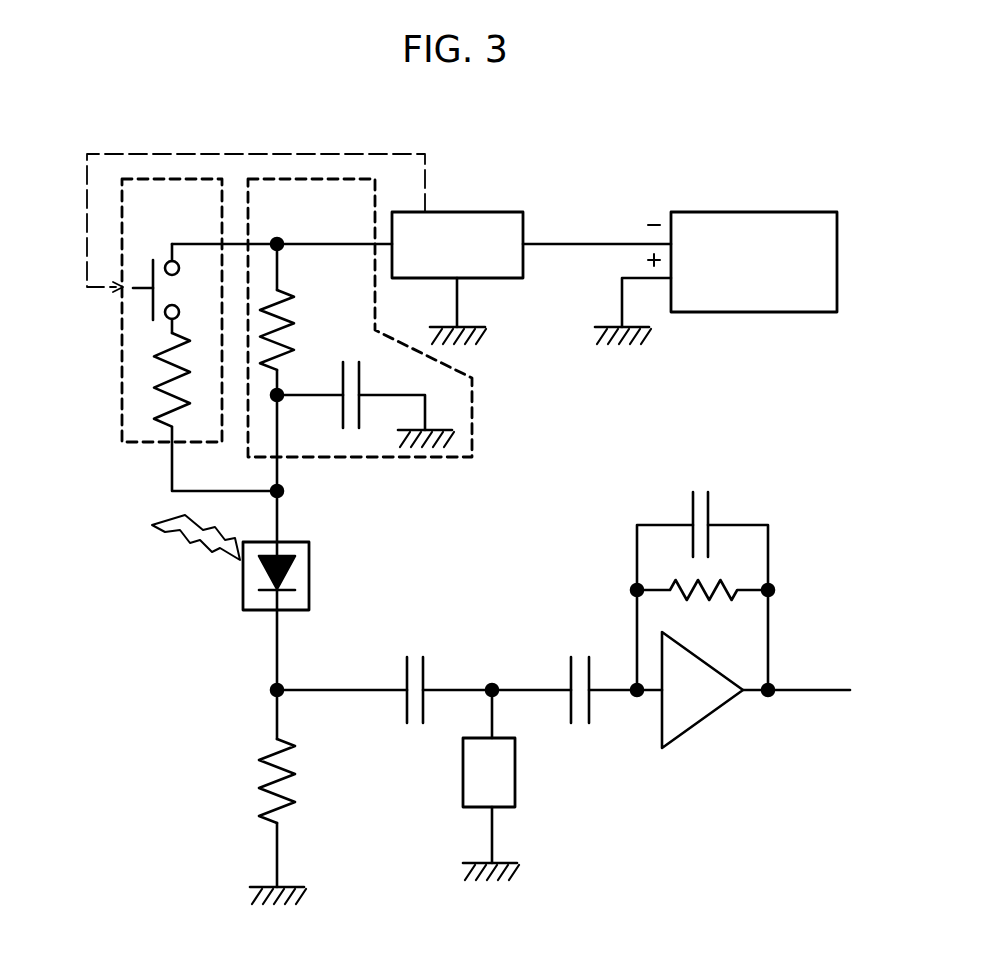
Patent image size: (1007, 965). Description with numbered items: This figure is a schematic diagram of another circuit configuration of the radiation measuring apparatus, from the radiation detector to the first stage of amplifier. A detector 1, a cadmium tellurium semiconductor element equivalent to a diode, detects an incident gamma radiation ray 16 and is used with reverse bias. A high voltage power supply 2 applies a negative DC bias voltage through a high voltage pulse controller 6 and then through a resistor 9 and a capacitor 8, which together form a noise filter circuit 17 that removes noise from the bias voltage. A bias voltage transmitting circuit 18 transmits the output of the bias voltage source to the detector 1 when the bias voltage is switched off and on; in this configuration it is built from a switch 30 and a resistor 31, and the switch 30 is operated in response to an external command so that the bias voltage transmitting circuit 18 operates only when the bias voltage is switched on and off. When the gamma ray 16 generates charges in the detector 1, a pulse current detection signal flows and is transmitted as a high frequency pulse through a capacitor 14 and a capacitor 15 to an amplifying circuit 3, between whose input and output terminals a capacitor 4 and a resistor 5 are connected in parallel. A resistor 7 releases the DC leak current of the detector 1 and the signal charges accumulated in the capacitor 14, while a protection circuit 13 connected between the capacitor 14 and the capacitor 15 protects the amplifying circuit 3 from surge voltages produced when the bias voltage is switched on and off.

The detector 1 is at (243, 580).
The high voltage power supply 2 is at (742, 212).
The amplifying circuit 3 is at (708, 708).
The capacitor 4 is at (703, 490).
The resistor 5 is at (720, 582).
The high voltage pulse controller 6 is at (455, 212).
The resistor 7 is at (262, 782).
The capacitor 8 is at (363, 418).
The resistor 9 is at (295, 352).
The protection circuit 13 is at (515, 780).
The capacitor 14 is at (415, 652).
The capacitor 15 is at (580, 652).
The radiation ray 16 is at (165, 530).
The noise filter circuit 17 is at (312, 179).
The bias voltage transmitting circuit 18 is at (178, 179).
The switch 30 is at (145, 305).
The resistor 31 is at (147, 370).